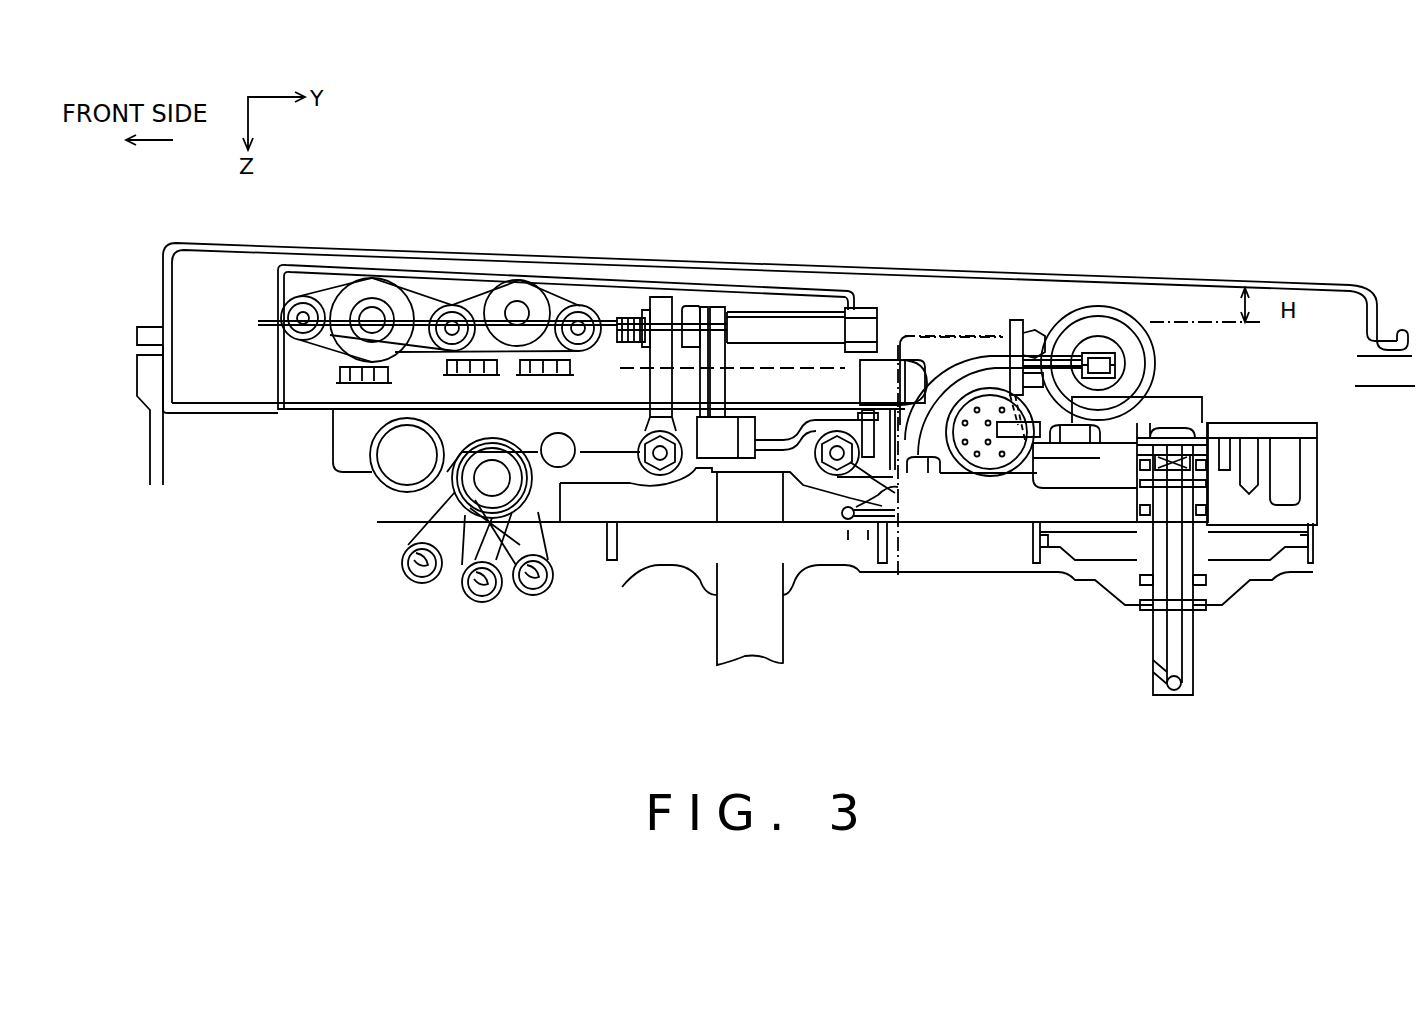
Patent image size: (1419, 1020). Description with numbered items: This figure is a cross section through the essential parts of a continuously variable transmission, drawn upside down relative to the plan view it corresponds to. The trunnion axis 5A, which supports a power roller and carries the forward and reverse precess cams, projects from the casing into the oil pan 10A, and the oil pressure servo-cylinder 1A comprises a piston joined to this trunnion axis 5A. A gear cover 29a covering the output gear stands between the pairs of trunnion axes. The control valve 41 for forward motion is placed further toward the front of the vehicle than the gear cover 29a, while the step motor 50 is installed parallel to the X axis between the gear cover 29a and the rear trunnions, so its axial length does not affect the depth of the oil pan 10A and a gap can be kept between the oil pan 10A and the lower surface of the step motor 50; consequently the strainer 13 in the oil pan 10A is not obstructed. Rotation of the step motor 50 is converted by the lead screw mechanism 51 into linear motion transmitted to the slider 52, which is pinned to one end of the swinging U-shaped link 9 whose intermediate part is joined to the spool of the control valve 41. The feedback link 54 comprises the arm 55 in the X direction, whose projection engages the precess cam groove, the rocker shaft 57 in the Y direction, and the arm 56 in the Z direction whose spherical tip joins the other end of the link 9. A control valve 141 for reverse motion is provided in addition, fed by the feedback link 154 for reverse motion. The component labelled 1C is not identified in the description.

The oil pan 10A is at (488, 256).
The feedback link for reverse motion 154 is at (640, 368).
The strainer 13 is at (644, 297).
The feedback link 54 is at (942, 184).
The arm 56 is at (722, 390).
The rocker shaft 57 is at (795, 312).
The arm 55 is at (872, 308).
The gear cover 29a is at (925, 337).
The link 9 is at (982, 335).
The slider 52 is at (1088, 352).
The lead screw mechanism 51 is at (1105, 340).
The step motor 50 is at (1153, 320).
The control valve for reverse motion 141 is at (658, 475).
The trunnion axis 5A is at (762, 648).
The oil pressure servo-cylinder 1A is at (848, 592).
The control valve 41 is at (892, 490).
The drive housing 1C is at (1259, 594).